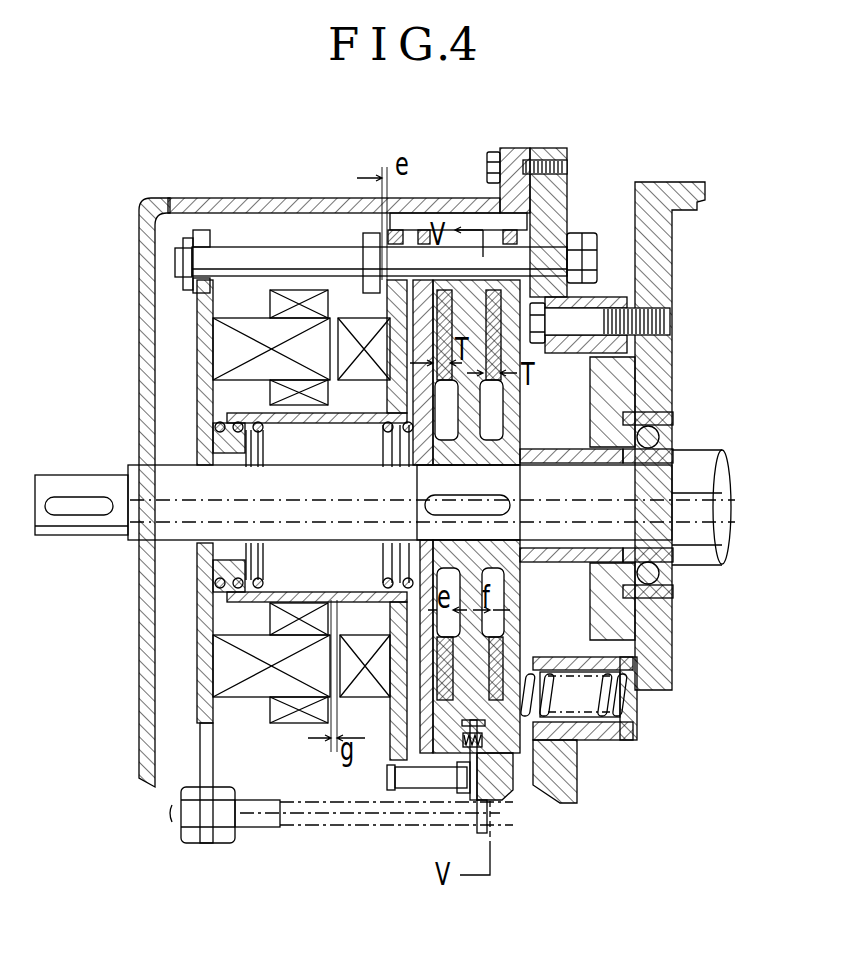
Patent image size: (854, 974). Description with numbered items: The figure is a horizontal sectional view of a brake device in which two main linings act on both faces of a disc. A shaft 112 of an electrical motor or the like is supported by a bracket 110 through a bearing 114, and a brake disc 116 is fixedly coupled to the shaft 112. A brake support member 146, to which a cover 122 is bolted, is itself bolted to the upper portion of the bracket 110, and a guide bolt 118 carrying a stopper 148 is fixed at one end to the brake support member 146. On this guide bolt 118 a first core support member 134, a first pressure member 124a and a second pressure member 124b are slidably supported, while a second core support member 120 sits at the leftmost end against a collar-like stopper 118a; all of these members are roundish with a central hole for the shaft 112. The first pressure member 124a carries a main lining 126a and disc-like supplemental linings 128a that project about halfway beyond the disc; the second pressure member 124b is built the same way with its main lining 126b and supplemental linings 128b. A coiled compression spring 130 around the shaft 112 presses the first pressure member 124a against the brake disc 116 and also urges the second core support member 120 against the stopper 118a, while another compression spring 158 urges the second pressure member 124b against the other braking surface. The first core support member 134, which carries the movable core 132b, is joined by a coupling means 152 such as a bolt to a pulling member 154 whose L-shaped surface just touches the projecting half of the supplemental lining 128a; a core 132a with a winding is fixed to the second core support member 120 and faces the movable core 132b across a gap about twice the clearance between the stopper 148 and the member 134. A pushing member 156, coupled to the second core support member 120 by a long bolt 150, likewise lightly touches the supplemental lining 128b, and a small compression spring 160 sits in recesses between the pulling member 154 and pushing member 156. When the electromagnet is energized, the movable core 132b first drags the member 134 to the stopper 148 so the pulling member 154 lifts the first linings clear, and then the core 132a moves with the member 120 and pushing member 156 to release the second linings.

The bracket 110 is at (688, 185).
The shaft 112 is at (653, 477).
The bearing 114 is at (670, 617).
The brake disc 116 is at (477, 650).
The guide bolt 118 is at (267, 255).
The collar like stopper 118a is at (177, 223).
The second core support member 120 is at (200, 313).
The cover 122 is at (143, 337).
The first pressure member 124a is at (423, 222).
The second pressure member 124b is at (560, 222).
The main lining 126a is at (443, 300).
The main lining 126b is at (500, 343).
The supplemental lining 128a is at (423, 754).
The supplemental lining 128b is at (570, 750).
The coiled compression spring 130 is at (213, 583).
The core 132a is at (230, 368).
The movable core 132b is at (352, 330).
The first core support member 134 is at (398, 230).
The brake support member 146 is at (540, 150).
The stopper 148 is at (371, 235).
The long bolt 150 is at (308, 820).
The coupling means 152 is at (443, 800).
The pulling member 154 is at (450, 790).
The pushing member 156 is at (493, 792).
The compression spring 158 is at (607, 737).
The small compression spring 160 is at (507, 753).